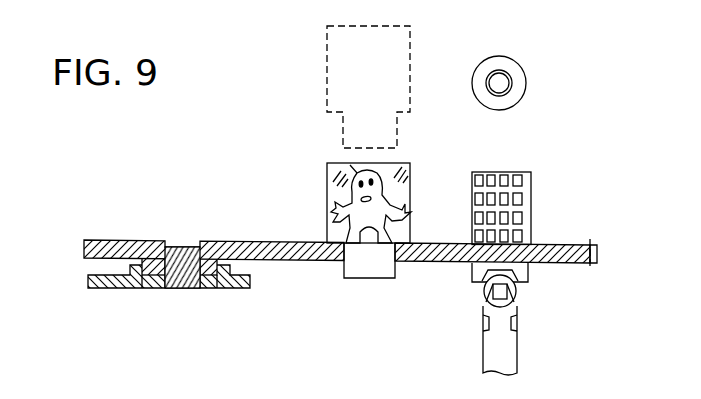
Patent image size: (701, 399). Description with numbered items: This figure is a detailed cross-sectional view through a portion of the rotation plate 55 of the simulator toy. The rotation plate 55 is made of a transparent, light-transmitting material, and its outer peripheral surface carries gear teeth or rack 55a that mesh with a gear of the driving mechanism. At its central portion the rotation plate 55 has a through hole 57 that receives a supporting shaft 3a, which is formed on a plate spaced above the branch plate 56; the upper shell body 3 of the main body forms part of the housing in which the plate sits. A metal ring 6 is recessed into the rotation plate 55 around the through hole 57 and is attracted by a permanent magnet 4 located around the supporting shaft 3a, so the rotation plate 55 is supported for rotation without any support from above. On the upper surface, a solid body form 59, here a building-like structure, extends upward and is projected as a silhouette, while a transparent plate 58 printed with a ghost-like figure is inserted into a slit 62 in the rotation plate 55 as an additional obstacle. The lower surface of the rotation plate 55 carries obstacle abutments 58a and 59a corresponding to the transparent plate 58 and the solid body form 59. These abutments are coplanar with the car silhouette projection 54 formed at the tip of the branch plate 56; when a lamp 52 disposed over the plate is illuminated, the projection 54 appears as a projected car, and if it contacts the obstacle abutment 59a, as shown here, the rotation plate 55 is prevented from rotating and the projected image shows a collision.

The upper shell body 3 is at (107, 290).
The supporting shaft 3a is at (185, 290).
The permanent magnet 4 is at (156, 288).
The metal ring 6 is at (152, 240).
The through hole 57 is at (195, 246).
The rotation plate 55 is at (290, 242).
The gear teeth or rack 55a is at (600, 252).
The transparent plate 58 is at (326, 185).
The obstacle abutment 58a is at (372, 281).
The slit 62 is at (337, 256).
The solid body form 59 is at (532, 190).
The obstacle abutment 59a is at (472, 276).
The car silhouette projection 54 is at (518, 290).
The branch plate 56 is at (485, 352).
The lamp 52 is at (527, 78).